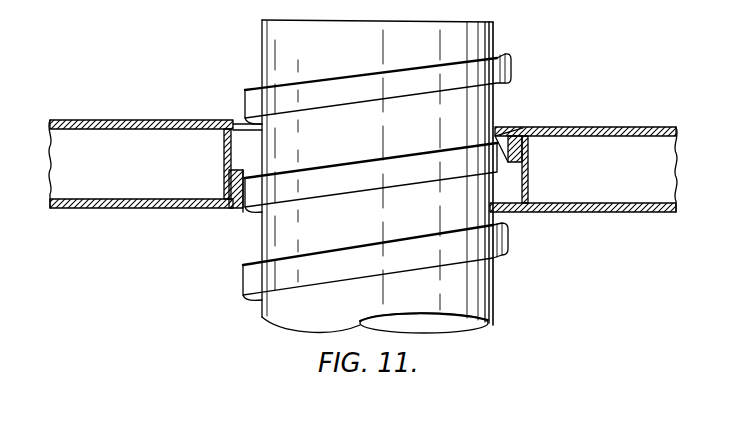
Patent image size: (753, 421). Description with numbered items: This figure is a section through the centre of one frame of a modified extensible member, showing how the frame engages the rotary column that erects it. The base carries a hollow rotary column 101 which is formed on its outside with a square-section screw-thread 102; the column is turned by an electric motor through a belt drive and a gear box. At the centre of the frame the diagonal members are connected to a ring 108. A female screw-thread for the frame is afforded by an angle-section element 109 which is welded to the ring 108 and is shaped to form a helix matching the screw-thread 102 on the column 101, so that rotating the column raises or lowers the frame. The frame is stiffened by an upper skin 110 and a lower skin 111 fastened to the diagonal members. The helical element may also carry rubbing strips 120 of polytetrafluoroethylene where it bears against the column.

The hollow rotary column 101 is at (477, 35).
The square-section screw-thread 102 is at (509, 62).
The ring 108 is at (568, 140).
The angle-section element 109 is at (502, 126).
The upper skin 110 is at (118, 120).
The lower skin 111 is at (127, 208).
The P.T.F.E. rubbing strips 120 is at (237, 212).